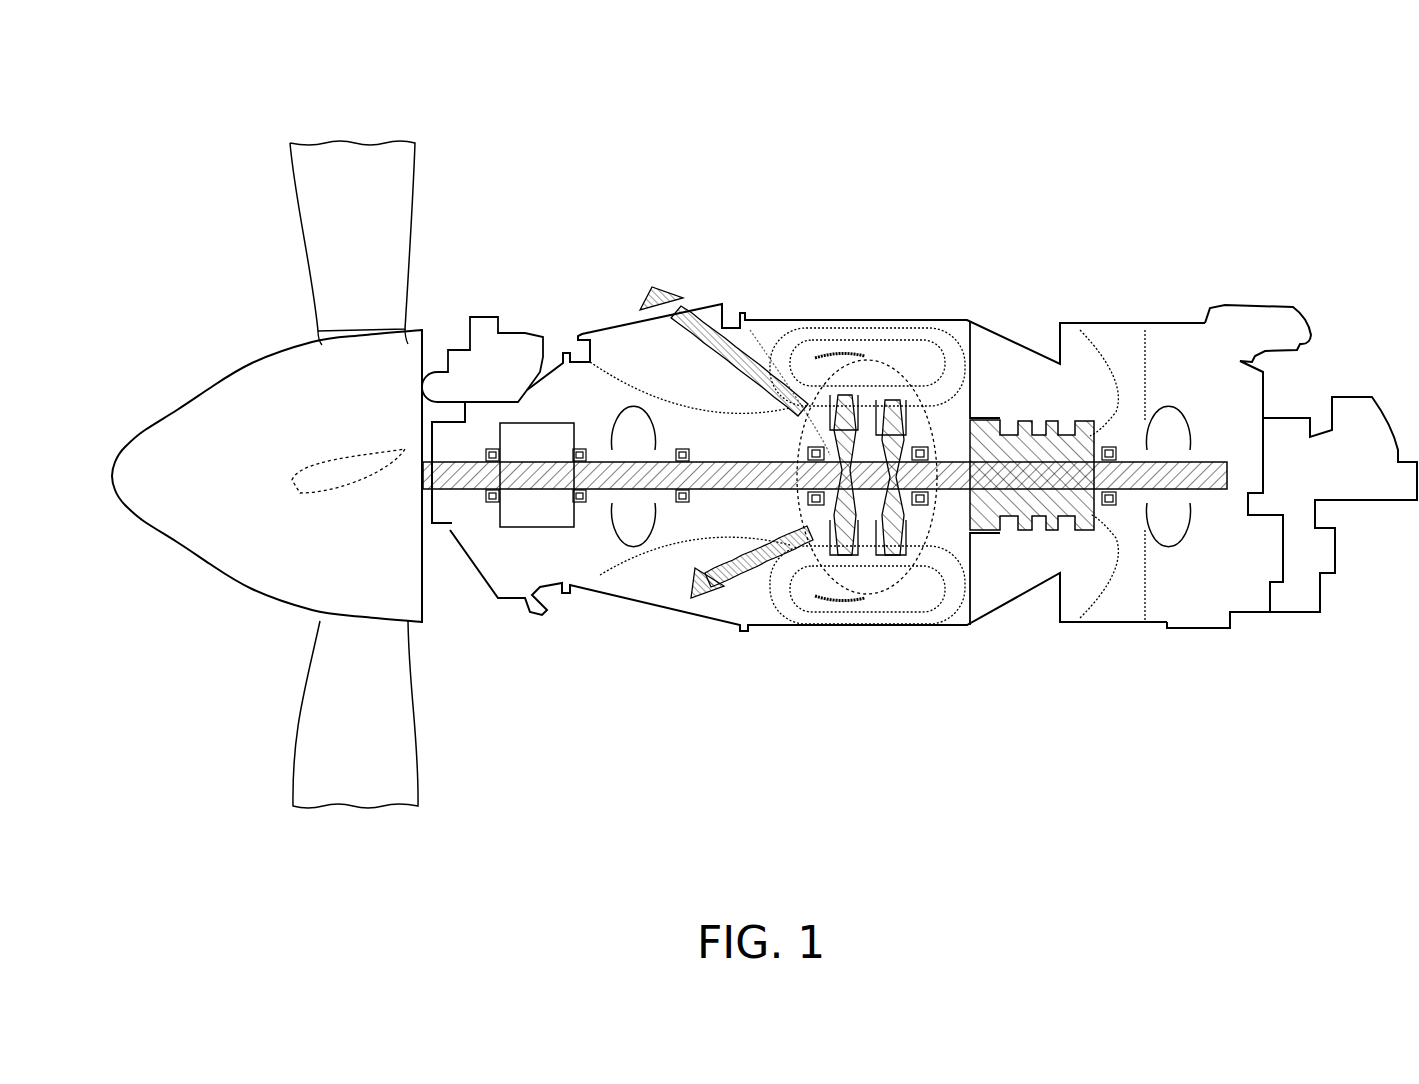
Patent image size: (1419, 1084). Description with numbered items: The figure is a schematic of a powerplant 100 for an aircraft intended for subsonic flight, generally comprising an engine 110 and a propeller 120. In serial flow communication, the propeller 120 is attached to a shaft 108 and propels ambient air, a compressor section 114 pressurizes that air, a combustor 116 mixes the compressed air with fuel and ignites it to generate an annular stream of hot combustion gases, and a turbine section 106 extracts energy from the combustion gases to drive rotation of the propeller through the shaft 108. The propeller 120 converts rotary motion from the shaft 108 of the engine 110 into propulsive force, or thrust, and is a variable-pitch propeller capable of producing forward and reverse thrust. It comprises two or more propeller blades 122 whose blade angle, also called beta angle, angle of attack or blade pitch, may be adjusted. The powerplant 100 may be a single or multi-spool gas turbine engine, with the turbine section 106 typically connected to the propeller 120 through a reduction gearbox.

The powerplant 100 is at (1062, 76).
The turbine section 106 is at (797, 500).
The shaft 108 is at (452, 490).
The engine 110 is at (1343, 280).
The compressor section 114 is at (1018, 562).
The combustor 116 is at (896, 358).
The propeller 120 is at (415, 130).
The propeller blades 122 is at (392, 195).